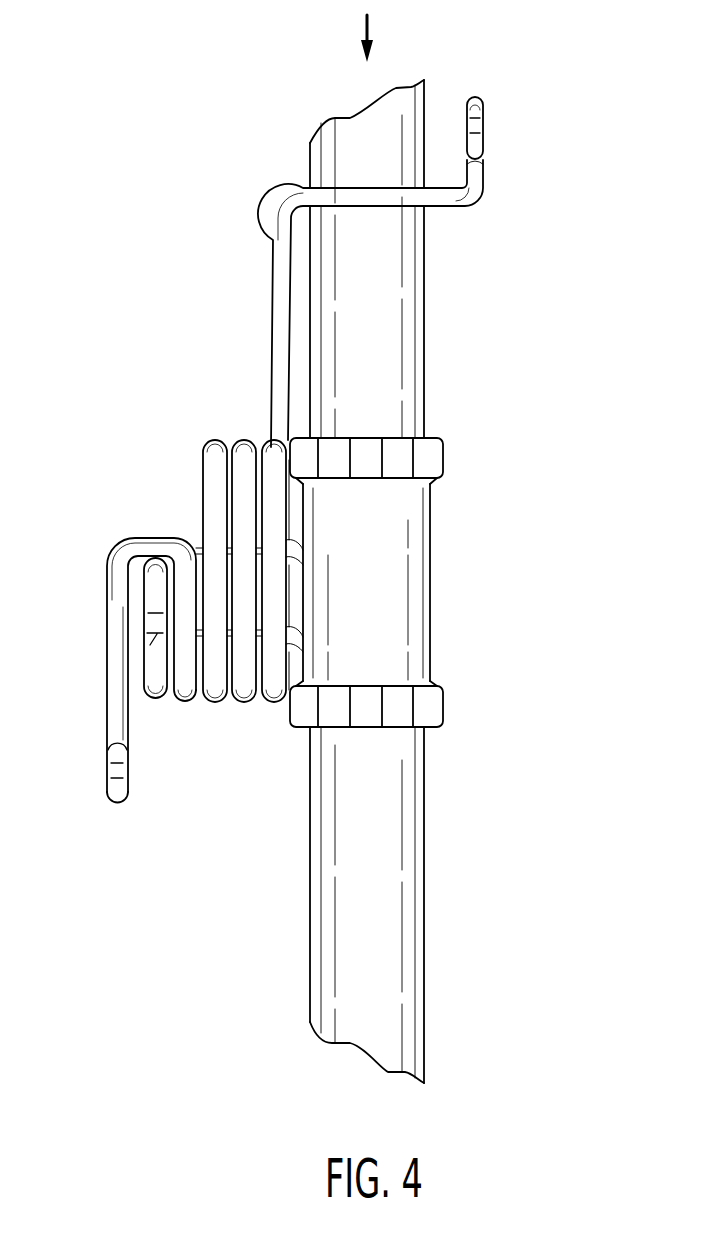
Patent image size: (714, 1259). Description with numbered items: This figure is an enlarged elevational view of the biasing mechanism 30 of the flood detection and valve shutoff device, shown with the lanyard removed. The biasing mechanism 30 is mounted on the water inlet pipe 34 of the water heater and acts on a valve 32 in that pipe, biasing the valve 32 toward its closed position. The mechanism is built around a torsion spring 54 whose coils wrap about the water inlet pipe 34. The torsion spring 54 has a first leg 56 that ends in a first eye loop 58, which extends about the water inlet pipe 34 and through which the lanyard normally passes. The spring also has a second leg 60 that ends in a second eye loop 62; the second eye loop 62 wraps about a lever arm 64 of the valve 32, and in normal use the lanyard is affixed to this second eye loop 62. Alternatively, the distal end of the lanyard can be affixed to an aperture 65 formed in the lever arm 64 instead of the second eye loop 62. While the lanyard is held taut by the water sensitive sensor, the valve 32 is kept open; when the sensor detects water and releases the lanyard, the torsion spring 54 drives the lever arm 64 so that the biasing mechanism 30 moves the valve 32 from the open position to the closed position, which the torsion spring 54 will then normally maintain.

The biasing mechanism 30 is at (259, 293).
The valve 32 is at (418, 645).
The water inlet pipe 34 is at (327, 151).
The torsion spring 54 is at (212, 458).
The first leg 56 is at (278, 355).
The first eye loop 58 is at (483, 133).
The second leg 60 is at (113, 633).
The second eye loop 62 is at (110, 753).
The lever arm 64 is at (151, 685).
The aperture 65 is at (150, 645).